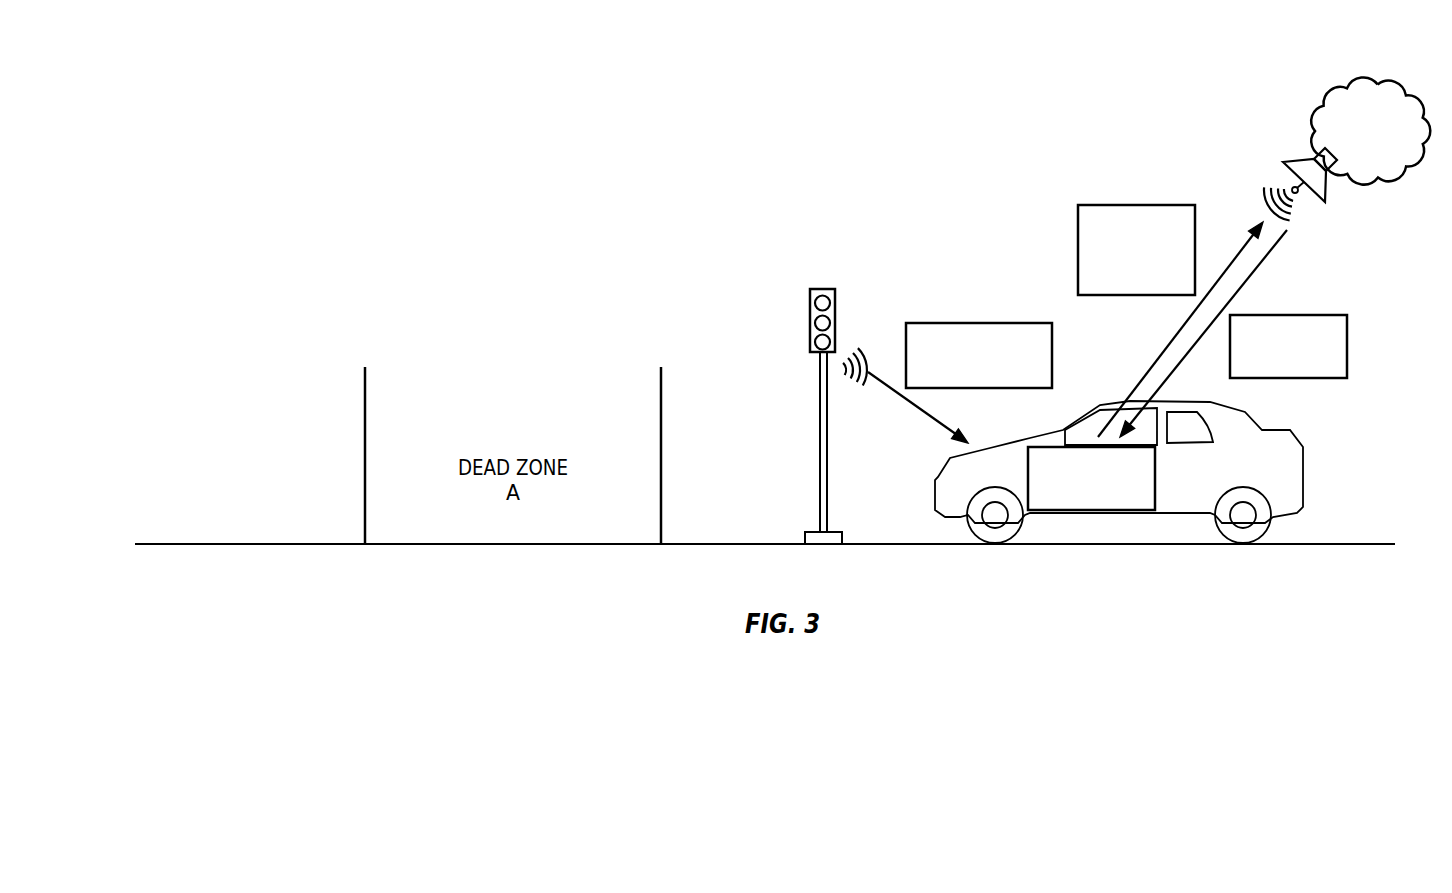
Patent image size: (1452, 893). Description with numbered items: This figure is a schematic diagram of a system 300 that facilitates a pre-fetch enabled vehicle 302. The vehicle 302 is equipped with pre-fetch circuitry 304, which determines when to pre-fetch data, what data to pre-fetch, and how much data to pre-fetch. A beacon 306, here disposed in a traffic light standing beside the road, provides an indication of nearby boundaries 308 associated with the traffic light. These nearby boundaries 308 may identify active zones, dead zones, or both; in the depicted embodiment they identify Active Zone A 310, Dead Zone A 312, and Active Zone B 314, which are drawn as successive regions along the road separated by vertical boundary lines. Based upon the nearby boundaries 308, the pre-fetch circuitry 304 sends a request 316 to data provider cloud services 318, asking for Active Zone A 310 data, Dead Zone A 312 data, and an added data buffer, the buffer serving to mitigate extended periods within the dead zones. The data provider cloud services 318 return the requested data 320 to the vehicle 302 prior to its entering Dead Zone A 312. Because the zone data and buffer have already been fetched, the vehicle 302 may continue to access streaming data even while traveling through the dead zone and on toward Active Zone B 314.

The system 300 is at (192, 92).
The vehicle 302 is at (1242, 412).
The pre-fetch circuitry 304 is at (1093, 510).
The beacon 306 is at (820, 289).
The nearby boundaries 308 is at (975, 323).
The Active Zone A 310 is at (718, 360).
The Dead Zone A 312 is at (418, 360).
The Active Zone B 314 is at (173, 362).
The request 316 is at (1135, 205).
The data provider cloud services 318 is at (1385, 82).
The requested data 320 is at (1290, 315).